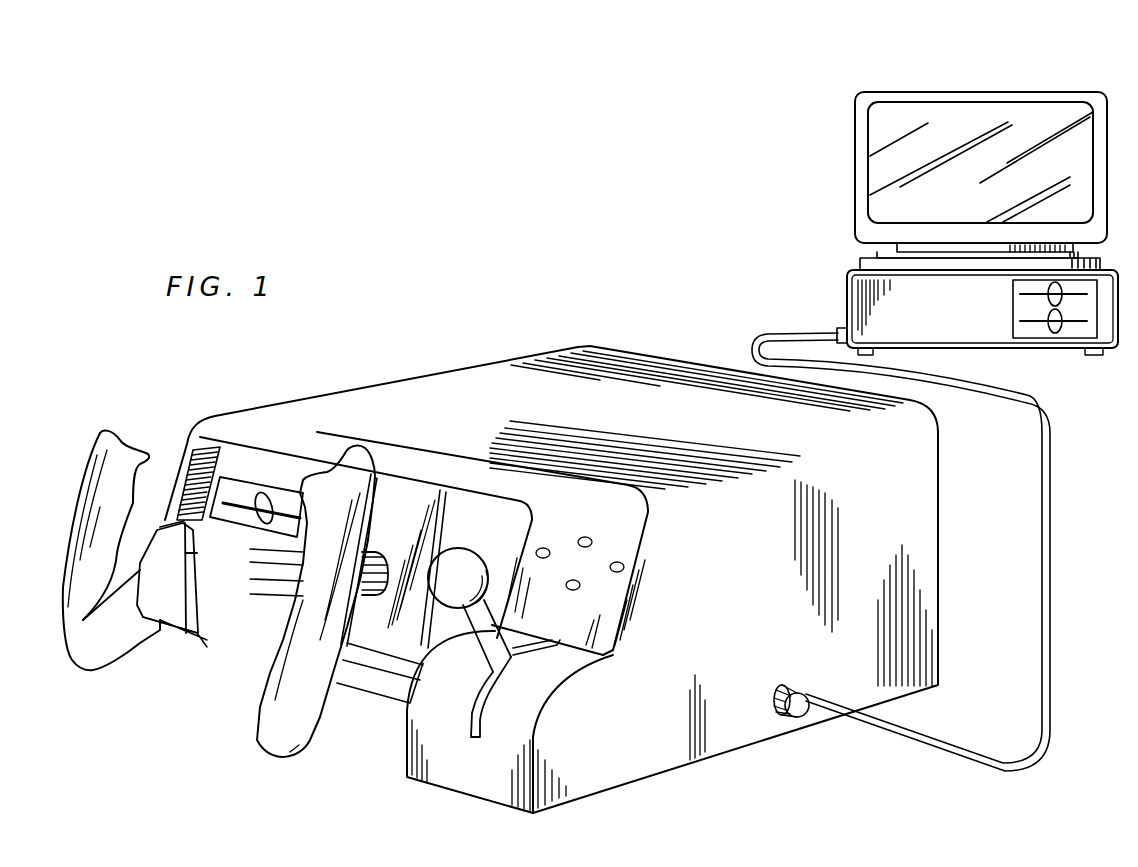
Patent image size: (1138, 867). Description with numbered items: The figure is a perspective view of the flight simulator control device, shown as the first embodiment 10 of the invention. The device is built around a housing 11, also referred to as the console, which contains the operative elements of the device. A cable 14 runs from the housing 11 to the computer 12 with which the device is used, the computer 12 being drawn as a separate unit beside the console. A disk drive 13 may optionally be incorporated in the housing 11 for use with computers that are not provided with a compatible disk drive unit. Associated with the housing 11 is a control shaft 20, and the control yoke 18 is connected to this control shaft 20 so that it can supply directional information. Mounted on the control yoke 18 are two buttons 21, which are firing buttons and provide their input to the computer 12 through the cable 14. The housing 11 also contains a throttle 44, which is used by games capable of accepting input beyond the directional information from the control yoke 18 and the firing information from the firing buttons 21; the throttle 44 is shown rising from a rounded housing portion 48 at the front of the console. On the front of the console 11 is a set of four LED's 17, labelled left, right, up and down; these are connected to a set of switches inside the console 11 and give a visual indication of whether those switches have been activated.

The first embodiment 10 is at (514, 326).
The housing 11 is at (925, 497).
The computer 12 is at (853, 268).
The disk drive 13 is at (252, 500).
The cable 14 is at (1058, 550).
The LED's 17 is at (610, 542).
The control yoke 18 is at (372, 505).
The control shaft 20 is at (375, 595).
The firing buttons 21 is at (122, 440).
The throttle 44 is at (463, 568).
The joystick housing 48 is at (527, 703).